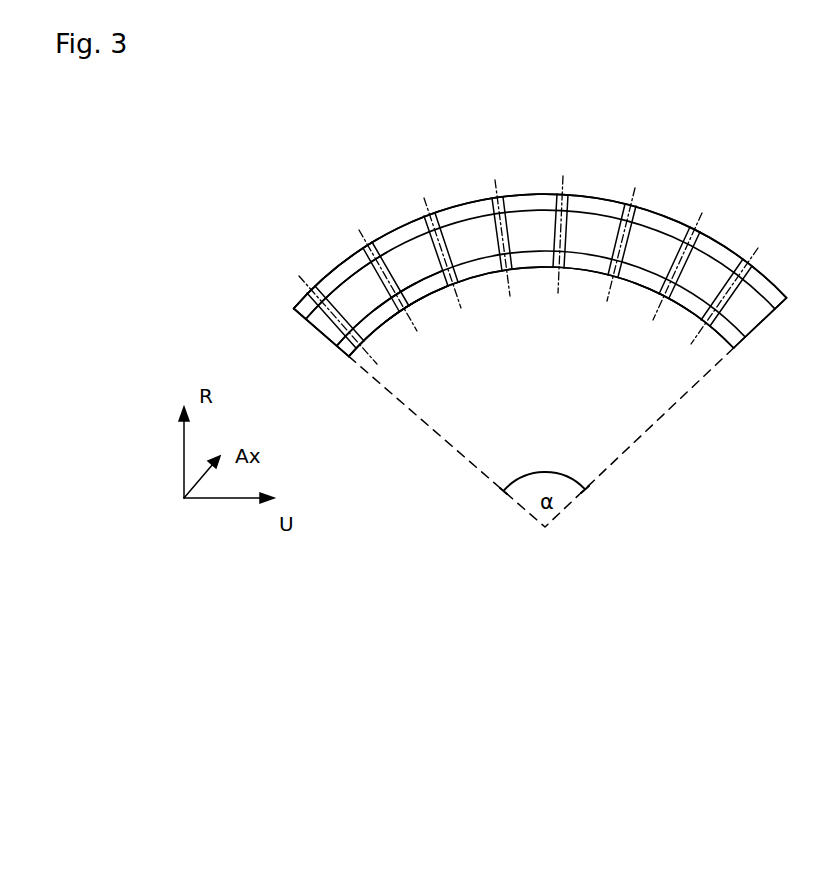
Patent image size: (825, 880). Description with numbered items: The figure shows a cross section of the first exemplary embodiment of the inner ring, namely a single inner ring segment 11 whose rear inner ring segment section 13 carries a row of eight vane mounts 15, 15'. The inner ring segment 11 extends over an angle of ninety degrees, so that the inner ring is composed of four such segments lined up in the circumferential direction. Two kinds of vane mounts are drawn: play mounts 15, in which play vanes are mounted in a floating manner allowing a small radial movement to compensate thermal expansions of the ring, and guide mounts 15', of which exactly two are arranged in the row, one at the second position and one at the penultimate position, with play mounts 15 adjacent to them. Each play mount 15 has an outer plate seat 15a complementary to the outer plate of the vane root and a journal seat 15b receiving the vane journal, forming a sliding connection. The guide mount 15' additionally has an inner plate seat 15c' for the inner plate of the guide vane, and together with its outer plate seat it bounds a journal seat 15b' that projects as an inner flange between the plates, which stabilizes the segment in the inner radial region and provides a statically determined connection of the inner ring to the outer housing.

The inner ring segment 11 is at (249, 216).
The rear inner ring segment section 13 is at (305, 300).
The play mount 15 is at (529, 243).
The guide mount 15' is at (542, 245).
The outer plate seat 15a is at (357, 243).
The journal seat 15b is at (345, 337).
The journal seat 15b' is at (447, 322).
The inner plate seat 15c' is at (538, 346).